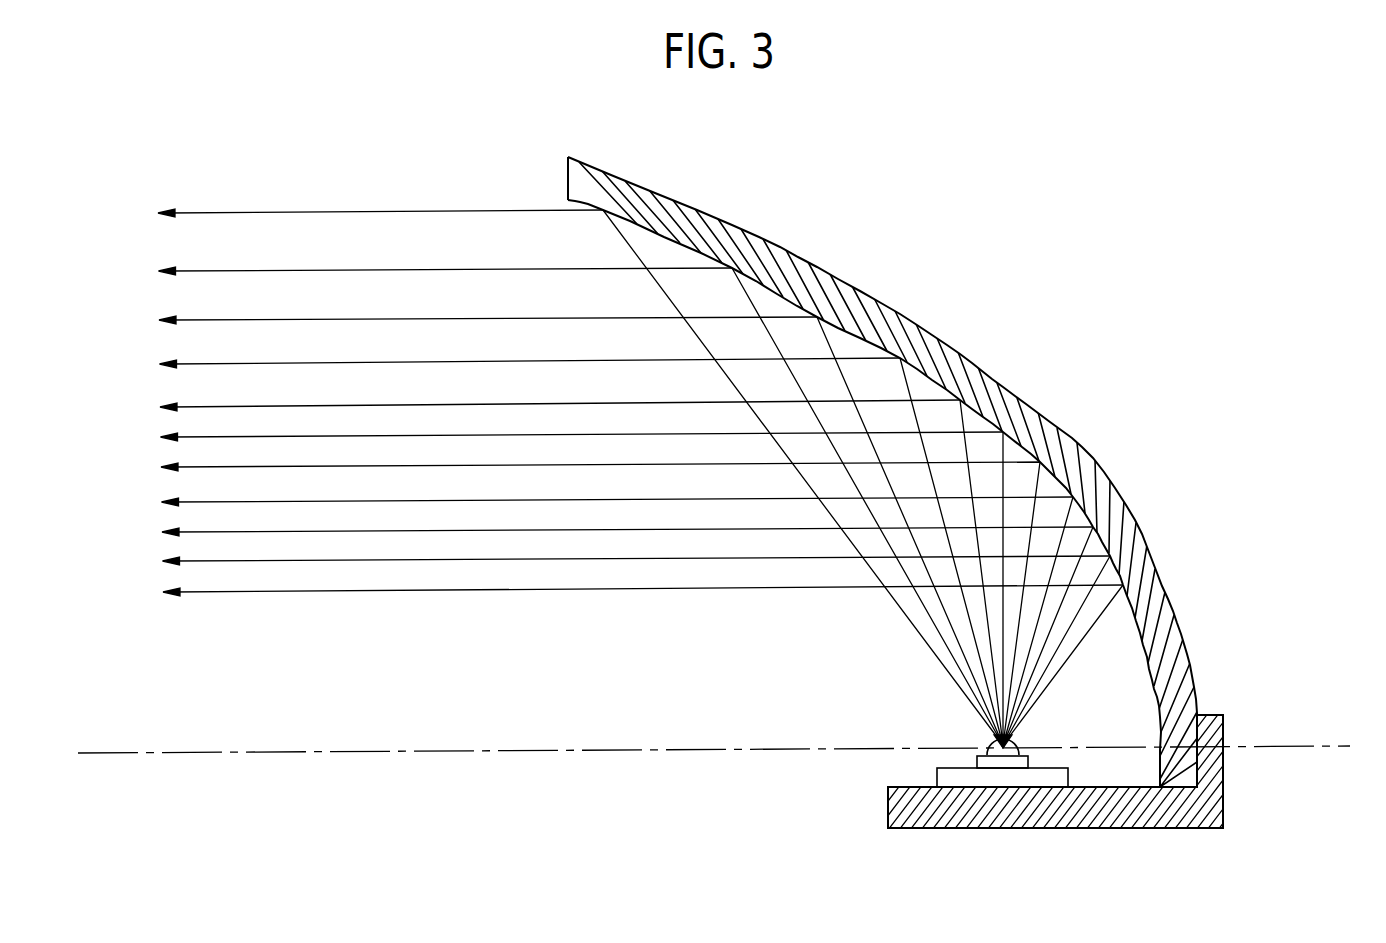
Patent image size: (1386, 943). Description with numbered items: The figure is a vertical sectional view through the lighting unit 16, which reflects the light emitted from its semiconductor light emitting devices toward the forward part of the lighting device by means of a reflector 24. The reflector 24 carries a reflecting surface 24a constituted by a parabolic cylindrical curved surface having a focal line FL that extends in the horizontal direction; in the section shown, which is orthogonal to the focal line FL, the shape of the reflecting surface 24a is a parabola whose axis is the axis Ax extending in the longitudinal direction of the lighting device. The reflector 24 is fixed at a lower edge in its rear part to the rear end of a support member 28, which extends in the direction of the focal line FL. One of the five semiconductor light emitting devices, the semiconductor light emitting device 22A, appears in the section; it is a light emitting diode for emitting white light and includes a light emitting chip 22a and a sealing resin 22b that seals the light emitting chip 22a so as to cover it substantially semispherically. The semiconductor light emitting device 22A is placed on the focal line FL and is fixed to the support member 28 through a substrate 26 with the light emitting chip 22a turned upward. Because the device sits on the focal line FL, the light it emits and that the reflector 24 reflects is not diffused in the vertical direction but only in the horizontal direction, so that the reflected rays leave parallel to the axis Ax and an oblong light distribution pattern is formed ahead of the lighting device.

The lighting unit 16 is at (1117, 333).
The reflector 24 is at (1093, 455).
The reflecting surface 24a is at (800, 307).
The semiconductor light emitting device 22A is at (1047, 750).
The light emitting chip 22a is at (1002, 750).
The sealing resin 22b is at (1000, 737).
The substrate 26 is at (948, 777).
The support member 28 is at (1125, 815).
The focal line FL is at (1003, 750).
The axis Ax is at (440, 752).